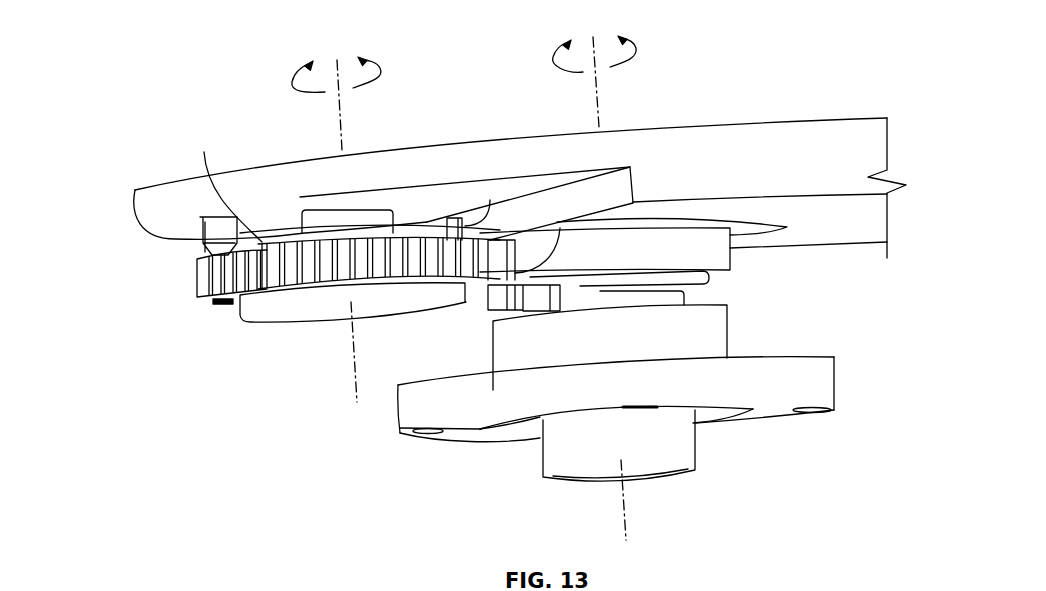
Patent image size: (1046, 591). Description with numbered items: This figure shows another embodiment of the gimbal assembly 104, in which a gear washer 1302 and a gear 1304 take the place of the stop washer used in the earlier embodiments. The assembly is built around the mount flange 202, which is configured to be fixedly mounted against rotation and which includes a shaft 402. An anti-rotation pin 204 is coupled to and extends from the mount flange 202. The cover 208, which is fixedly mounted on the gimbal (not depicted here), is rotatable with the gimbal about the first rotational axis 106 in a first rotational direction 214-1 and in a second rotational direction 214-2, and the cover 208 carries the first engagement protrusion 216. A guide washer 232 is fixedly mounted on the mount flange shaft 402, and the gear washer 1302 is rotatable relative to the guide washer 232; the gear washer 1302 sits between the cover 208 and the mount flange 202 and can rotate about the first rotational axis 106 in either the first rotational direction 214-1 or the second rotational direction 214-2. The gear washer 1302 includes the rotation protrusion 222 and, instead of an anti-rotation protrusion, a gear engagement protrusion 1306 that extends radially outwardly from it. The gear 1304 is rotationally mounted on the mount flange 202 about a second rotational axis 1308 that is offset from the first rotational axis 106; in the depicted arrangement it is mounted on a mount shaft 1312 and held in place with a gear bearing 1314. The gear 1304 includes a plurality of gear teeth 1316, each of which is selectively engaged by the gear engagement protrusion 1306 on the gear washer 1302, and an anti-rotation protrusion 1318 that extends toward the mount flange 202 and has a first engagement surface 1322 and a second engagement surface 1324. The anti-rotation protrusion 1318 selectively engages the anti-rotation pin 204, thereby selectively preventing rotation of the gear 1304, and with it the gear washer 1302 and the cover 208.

The gimbal assembly 104 is at (136, 72).
The first rotational axis 106 is at (598, 84).
The mount flange 202 is at (828, 130).
The anti-rotation pin 204 is at (203, 228).
The cover 208 is at (833, 384).
The first rotational direction 214-1 is at (300, 88).
The second rotational direction 214-2 is at (384, 67).
The first engagement protrusion 216 is at (528, 296).
The rotation protrusion 222 is at (490, 303).
The guide washer 232 is at (700, 279).
The shaft 402 is at (698, 446).
The gear washer 1302 is at (717, 246).
The gear 1304 is at (200, 318).
The gear engagement protrusion 1306 is at (557, 235).
The second rotational axis 1308 is at (336, 107).
The mount shaft 1312 is at (280, 322).
The gear bearing 1314 is at (219, 183).
The gear teeth 1316 is at (197, 285).
The anti-rotation protrusion 1318 is at (455, 218).
The first engagement surface 1322 is at (493, 240).
The second engagement surface 1324 is at (433, 223).